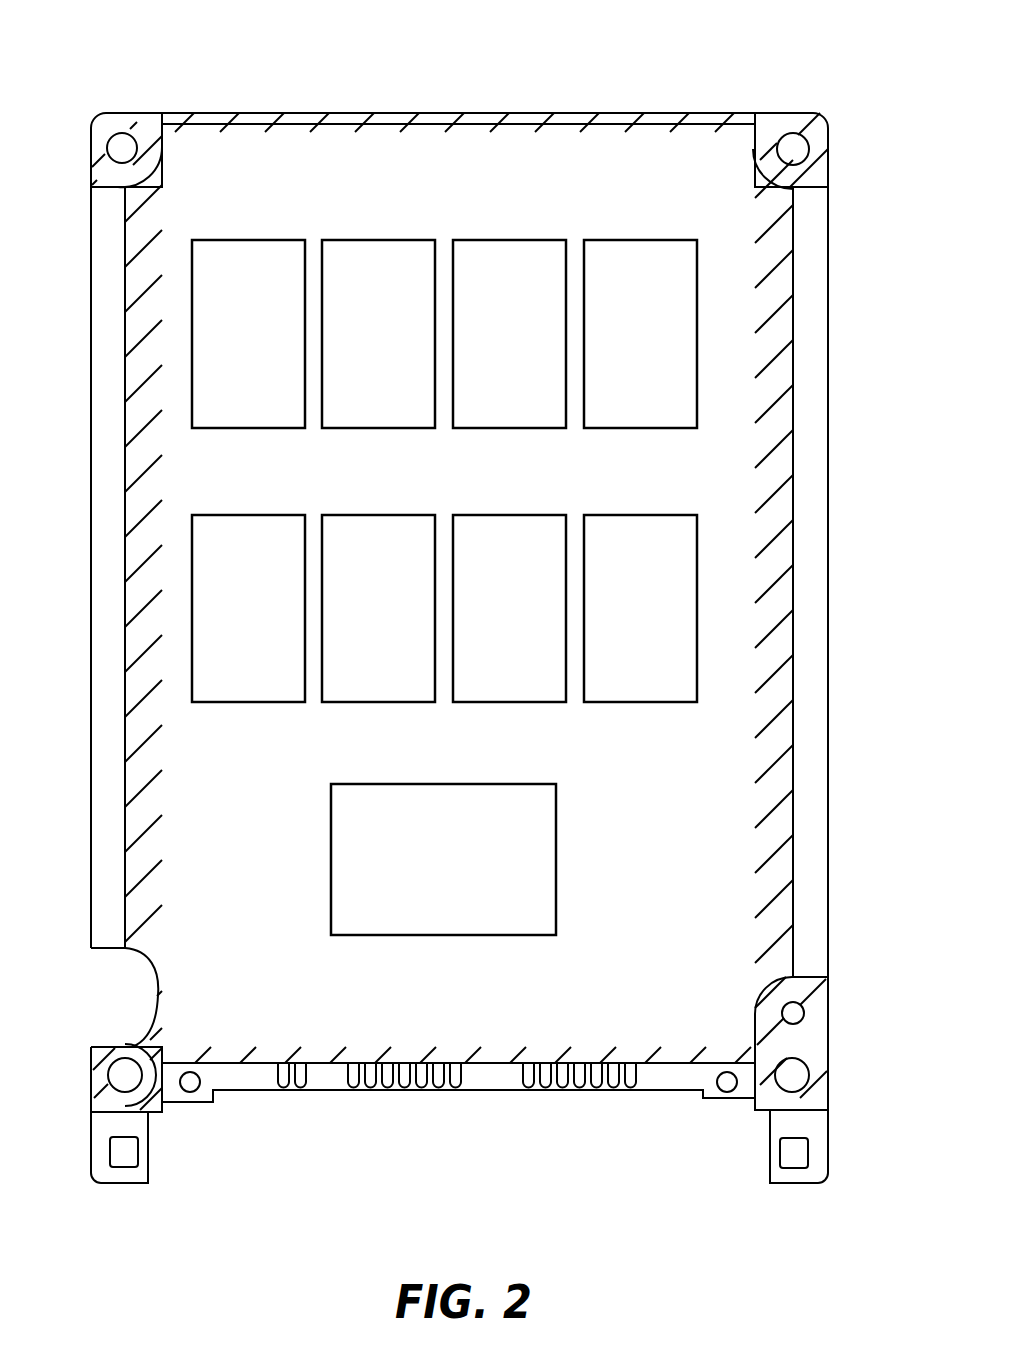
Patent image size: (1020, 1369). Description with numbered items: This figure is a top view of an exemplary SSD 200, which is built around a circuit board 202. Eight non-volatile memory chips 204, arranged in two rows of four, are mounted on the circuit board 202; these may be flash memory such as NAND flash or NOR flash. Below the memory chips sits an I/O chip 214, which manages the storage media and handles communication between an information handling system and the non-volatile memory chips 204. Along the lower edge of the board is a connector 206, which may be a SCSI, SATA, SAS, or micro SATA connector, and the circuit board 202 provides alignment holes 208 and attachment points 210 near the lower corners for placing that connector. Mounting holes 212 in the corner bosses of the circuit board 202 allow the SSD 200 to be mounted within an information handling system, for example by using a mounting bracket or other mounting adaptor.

The SSD 200 is at (718, 70).
The circuit board 202 is at (340, 200).
The non-volatile memory chips 204 is at (247, 333).
The connector 206 is at (490, 1090).
The alignment holes 208 is at (192, 1086).
The attachment points 210 is at (126, 1150).
The mounting holes 212 is at (127, 1077).
The I/O chip 214 is at (442, 858).